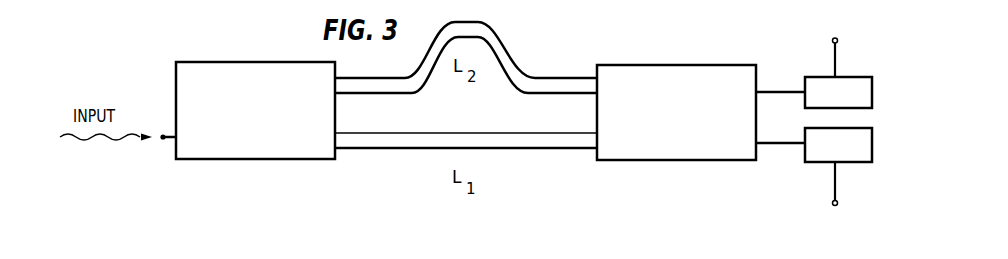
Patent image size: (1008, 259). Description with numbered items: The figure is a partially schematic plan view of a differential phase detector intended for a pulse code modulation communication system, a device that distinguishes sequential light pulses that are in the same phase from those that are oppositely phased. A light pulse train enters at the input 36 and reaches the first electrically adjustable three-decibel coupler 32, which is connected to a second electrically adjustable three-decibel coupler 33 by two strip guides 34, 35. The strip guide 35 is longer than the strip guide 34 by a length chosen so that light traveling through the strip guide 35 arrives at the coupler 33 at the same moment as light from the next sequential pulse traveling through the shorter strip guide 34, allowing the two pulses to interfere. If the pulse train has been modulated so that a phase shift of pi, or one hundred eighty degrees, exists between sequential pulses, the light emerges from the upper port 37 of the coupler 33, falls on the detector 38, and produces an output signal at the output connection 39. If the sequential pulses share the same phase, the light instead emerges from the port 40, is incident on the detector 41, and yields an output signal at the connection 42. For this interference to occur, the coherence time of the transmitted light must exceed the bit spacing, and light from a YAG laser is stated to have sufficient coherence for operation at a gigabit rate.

The electrically adjustable 3 dB coupler 32 is at (211, 62).
The electrically adjustable 3 dB coupler 33 is at (671, 67).
The strip guide 34 is at (550, 150).
The strip guide 35 is at (518, 70).
The input 36 is at (165, 140).
The upper port 37 is at (782, 91).
The detector 38 is at (860, 77).
The output connection 39 is at (833, 39).
The port 40 is at (781, 143).
The detector 41 is at (863, 162).
The connection 42 is at (838, 206).